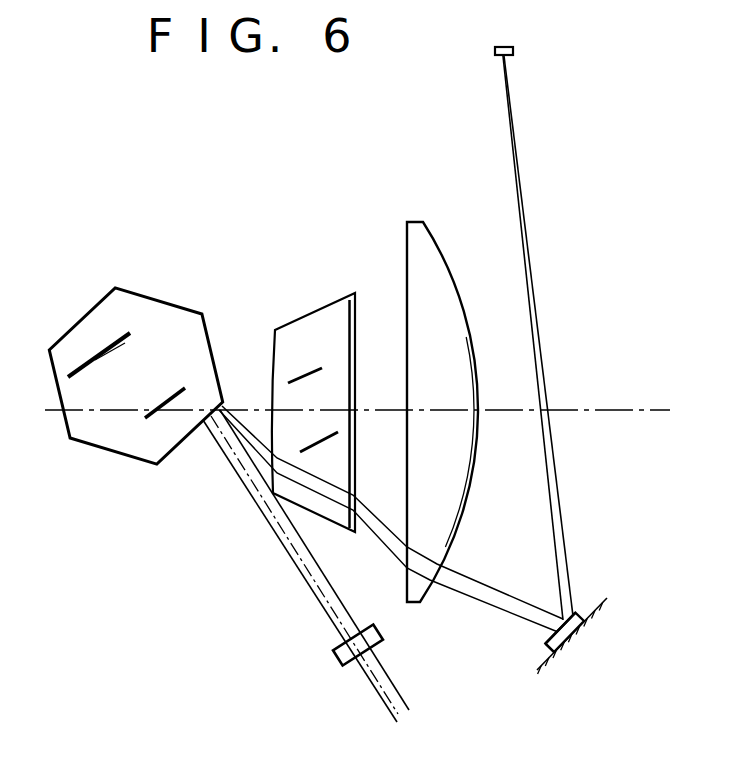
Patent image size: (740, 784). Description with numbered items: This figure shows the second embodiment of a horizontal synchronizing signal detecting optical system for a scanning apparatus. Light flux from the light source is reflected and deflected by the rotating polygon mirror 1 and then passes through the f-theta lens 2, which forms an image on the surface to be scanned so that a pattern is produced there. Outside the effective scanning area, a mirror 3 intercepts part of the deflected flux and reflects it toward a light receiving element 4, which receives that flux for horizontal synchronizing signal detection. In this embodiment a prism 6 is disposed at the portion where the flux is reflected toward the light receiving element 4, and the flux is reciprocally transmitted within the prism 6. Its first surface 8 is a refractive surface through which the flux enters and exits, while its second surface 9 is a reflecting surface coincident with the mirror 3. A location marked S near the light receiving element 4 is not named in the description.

The polygon mirror 1 is at (150, 295).
The f-theta lens 2 is at (298, 275).
The mirror 3 is at (604, 600).
The light receiving element 4 is at (514, 50).
The reference light beam S is at (507, 60).
The prism 6 is at (550, 643).
The first surface 8 is at (549, 640).
The second surface 9 is at (584, 624).